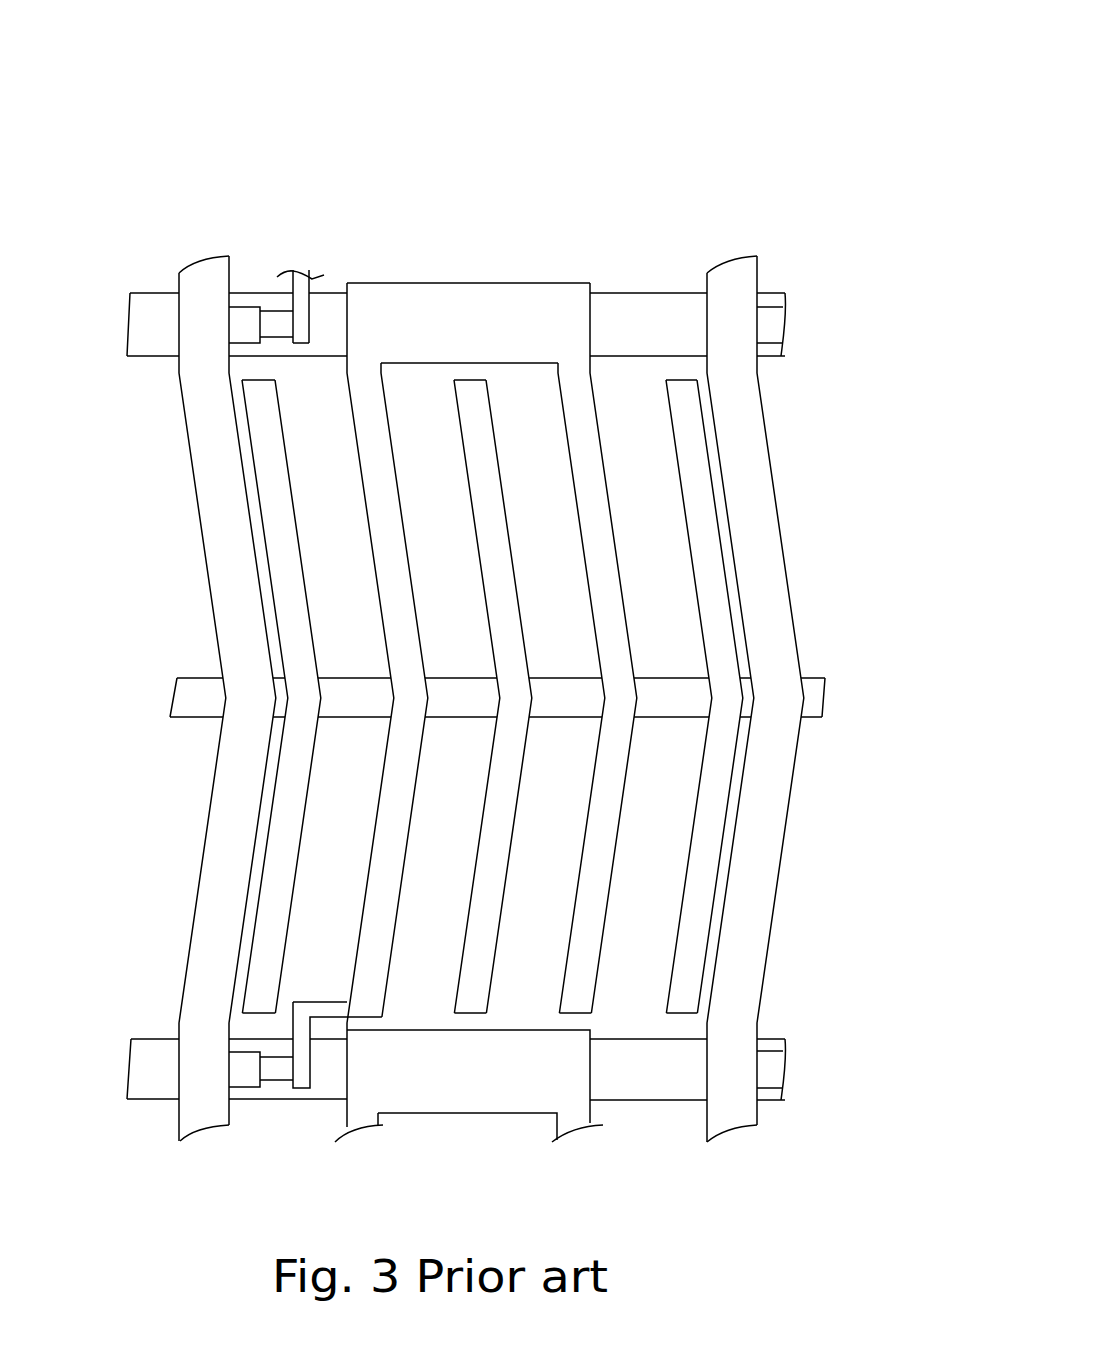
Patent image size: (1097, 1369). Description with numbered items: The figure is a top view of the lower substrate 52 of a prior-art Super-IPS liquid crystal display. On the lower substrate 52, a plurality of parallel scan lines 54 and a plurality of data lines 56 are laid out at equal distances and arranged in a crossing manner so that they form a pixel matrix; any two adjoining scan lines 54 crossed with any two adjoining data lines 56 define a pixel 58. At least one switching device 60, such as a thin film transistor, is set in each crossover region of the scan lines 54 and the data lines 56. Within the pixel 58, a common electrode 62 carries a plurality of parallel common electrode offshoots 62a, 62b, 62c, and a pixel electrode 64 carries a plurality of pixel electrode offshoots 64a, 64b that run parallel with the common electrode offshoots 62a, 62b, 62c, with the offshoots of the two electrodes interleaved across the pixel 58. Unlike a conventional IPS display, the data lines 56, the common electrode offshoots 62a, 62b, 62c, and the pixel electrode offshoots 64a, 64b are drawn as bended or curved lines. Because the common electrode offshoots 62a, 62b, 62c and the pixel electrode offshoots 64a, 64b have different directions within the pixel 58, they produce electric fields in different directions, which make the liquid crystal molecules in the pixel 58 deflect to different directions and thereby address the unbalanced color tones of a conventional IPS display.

The lower substrate 52 is at (683, 63).
The scan lines 54 is at (657, 313).
The data lines 56 is at (197, 1105).
The pixel 58 is at (637, 393).
The switching device 60 is at (287, 1118).
The common electrode 62 is at (817, 703).
The common electrode offshoot 62a is at (260, 435).
The common electrode offshoot 62b is at (485, 527).
The common electrode offshoot 62c is at (712, 617).
The pixel electrode 64 is at (459, 308).
The pixel electrode offshoot 64a is at (393, 802).
The pixel electrode offshoot 64b is at (588, 919).